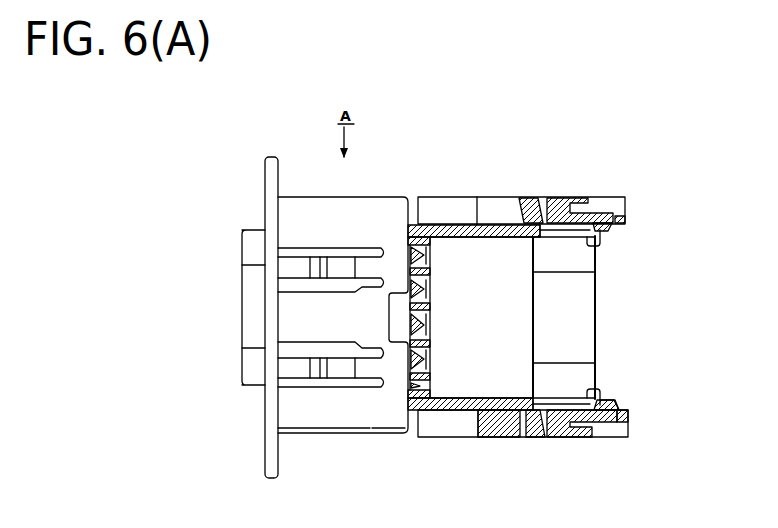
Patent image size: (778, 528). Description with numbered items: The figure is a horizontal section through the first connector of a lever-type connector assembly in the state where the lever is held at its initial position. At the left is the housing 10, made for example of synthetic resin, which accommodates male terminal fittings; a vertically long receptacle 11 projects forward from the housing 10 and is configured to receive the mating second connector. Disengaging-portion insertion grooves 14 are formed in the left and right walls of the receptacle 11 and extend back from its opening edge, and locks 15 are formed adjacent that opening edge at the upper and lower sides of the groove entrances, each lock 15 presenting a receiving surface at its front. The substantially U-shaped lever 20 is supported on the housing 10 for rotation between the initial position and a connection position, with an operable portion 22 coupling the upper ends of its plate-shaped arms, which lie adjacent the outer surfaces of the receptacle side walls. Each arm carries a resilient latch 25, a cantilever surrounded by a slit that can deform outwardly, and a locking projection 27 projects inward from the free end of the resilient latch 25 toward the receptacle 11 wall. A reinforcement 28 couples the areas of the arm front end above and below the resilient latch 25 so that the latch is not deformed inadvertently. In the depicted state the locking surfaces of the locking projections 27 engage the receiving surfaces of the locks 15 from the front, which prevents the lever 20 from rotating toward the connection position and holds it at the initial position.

The housing 10 is at (319, 417).
The receptacle 11 is at (450, 407).
The disengaging-portion insertion groove 14 is at (508, 248).
The lock 15 is at (600, 243).
The lever 20 is at (623, 184).
The operable portion 22 is at (533, 198).
The resilient latch 25 is at (608, 220).
The locking projection 27 is at (603, 406).
The reinforcement 28 is at (630, 416).